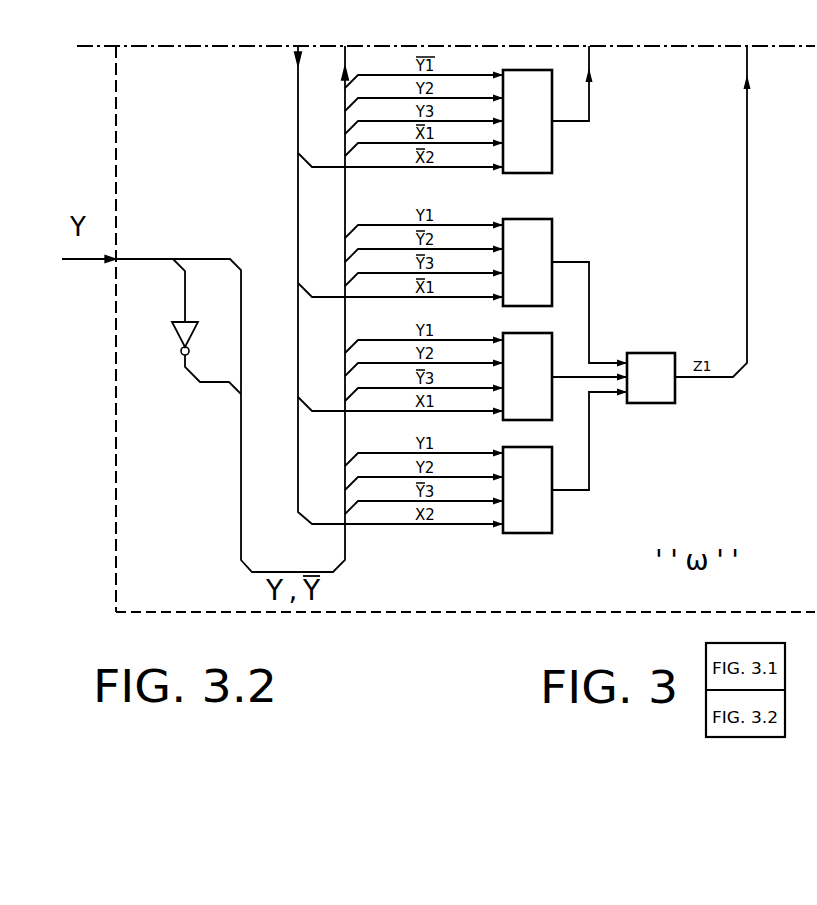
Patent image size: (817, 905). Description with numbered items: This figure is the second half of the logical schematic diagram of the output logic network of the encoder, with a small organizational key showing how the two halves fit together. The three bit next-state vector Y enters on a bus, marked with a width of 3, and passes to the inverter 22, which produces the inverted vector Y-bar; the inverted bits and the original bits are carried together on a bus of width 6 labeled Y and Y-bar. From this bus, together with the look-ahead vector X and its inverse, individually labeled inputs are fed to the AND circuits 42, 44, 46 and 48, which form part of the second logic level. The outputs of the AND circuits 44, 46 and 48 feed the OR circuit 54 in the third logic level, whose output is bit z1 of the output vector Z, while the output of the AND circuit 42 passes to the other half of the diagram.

The Y input bus (3 lines) 3 is at (88, 252).
The Y/not-Y bus (6 lines) 6 is at (252, 453).
The inverter 22 is at (197, 325).
The AND circuit 42 is at (552, 173).
The AND circuit 44 is at (552, 306).
The AND circuit 46 is at (552, 420).
The AND circuit 48 is at (552, 533).
The OR circuit 54 is at (665, 353).